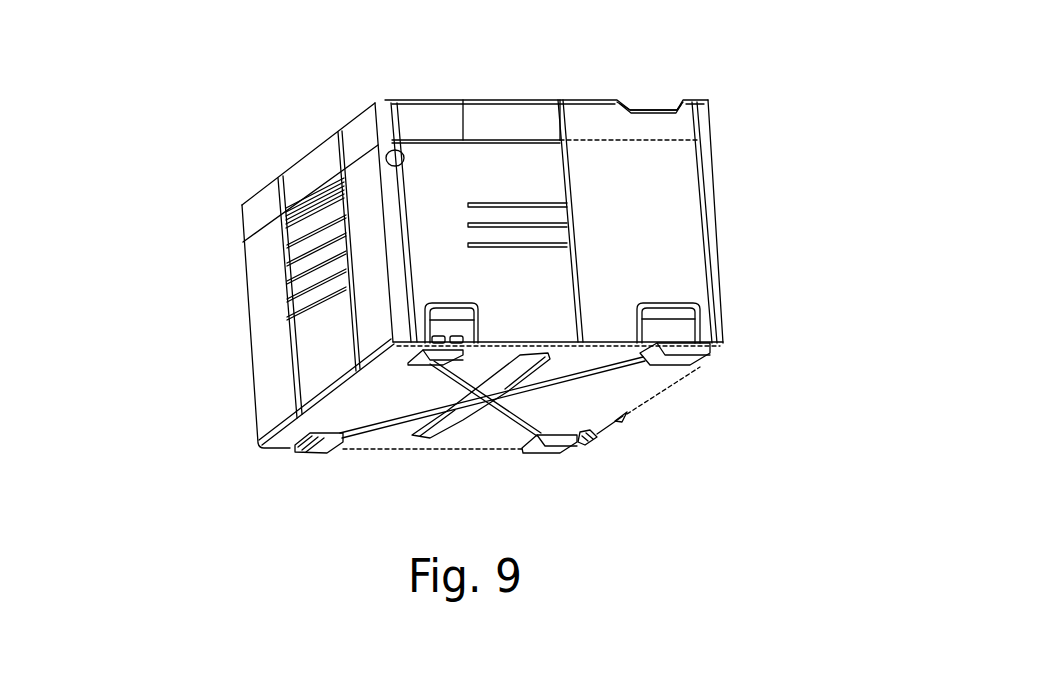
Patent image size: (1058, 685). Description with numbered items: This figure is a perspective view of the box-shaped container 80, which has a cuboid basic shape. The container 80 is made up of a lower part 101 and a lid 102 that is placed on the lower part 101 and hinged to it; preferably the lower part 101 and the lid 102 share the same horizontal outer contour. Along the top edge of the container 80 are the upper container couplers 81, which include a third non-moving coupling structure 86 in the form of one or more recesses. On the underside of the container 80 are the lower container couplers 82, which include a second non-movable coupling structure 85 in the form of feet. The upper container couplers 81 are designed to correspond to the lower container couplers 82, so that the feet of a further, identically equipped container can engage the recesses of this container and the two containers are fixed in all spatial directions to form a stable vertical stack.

The container 80 is at (200, 297).
The upper container couplers 81 is at (645, 67).
The third non-moving coupling structure 86 is at (652, 108).
The lower container couplers 82 is at (539, 414).
The second non-movable coupling structure 85 is at (317, 450).
The lower part 101 is at (263, 390).
The lid 102 is at (255, 208).